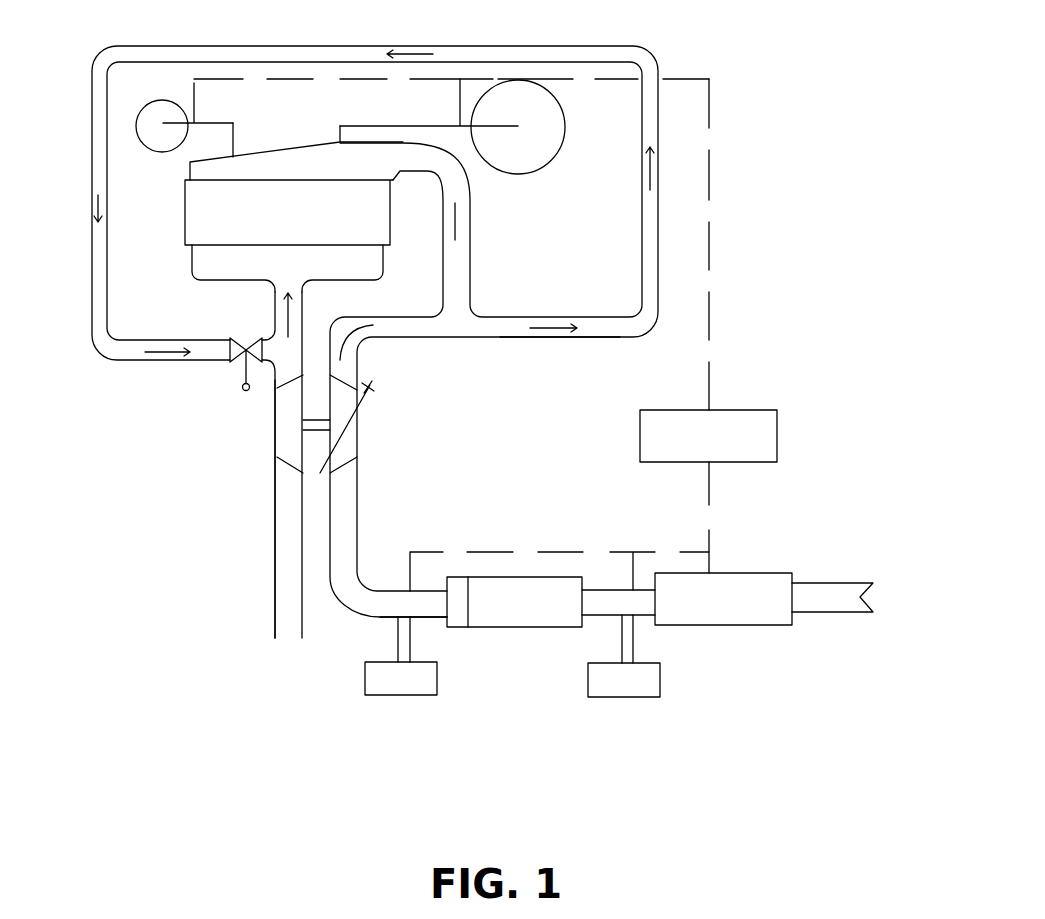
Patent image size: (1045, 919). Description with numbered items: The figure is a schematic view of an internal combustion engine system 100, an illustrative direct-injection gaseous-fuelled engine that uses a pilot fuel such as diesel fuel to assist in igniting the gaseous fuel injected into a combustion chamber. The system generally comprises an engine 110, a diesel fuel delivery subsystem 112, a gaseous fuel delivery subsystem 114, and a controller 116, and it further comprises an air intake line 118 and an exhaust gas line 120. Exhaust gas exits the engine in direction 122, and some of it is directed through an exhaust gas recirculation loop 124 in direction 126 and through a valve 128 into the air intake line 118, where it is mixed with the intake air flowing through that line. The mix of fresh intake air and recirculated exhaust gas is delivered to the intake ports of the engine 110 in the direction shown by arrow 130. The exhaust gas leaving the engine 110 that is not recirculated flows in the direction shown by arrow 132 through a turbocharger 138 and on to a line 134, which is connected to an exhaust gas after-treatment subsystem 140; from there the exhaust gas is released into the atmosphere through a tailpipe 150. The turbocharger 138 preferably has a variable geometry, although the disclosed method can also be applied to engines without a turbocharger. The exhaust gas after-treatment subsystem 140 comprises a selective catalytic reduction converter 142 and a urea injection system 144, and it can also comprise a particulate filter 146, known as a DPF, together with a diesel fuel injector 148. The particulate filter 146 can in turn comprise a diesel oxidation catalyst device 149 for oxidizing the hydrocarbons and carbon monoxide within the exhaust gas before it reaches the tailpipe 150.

The internal combustion engine system 100 is at (743, 138).
The engine 110 is at (190, 198).
The diesel fuel delivery subsystem 112 is at (213, 122).
The gaseous fuel delivery subsystem 114 is at (448, 118).
The controller 116 is at (747, 408).
The air intake line 118 is at (283, 532).
The exhaust gas line 120 is at (471, 265).
The direction 122 is at (457, 218).
The exhaust gas recirculation loop 124 is at (533, 43).
The direction 126 is at (550, 337).
The valve 128 is at (243, 370).
The arrow 130 is at (287, 316).
The arrow 132 is at (362, 338).
The line 134 is at (348, 493).
The turbocharger 138 is at (343, 403).
The exhaust gas after-treatment subsystem 140 is at (546, 510).
The selective catalytic reduction converter 142 is at (728, 617).
The urea injection system 144 is at (628, 682).
The particulate filter 146 is at (490, 617).
The diesel fuel injector 148 is at (403, 682).
The diesel oxidation catalyst device 149 is at (455, 617).
The tailpipe 150 is at (847, 607).